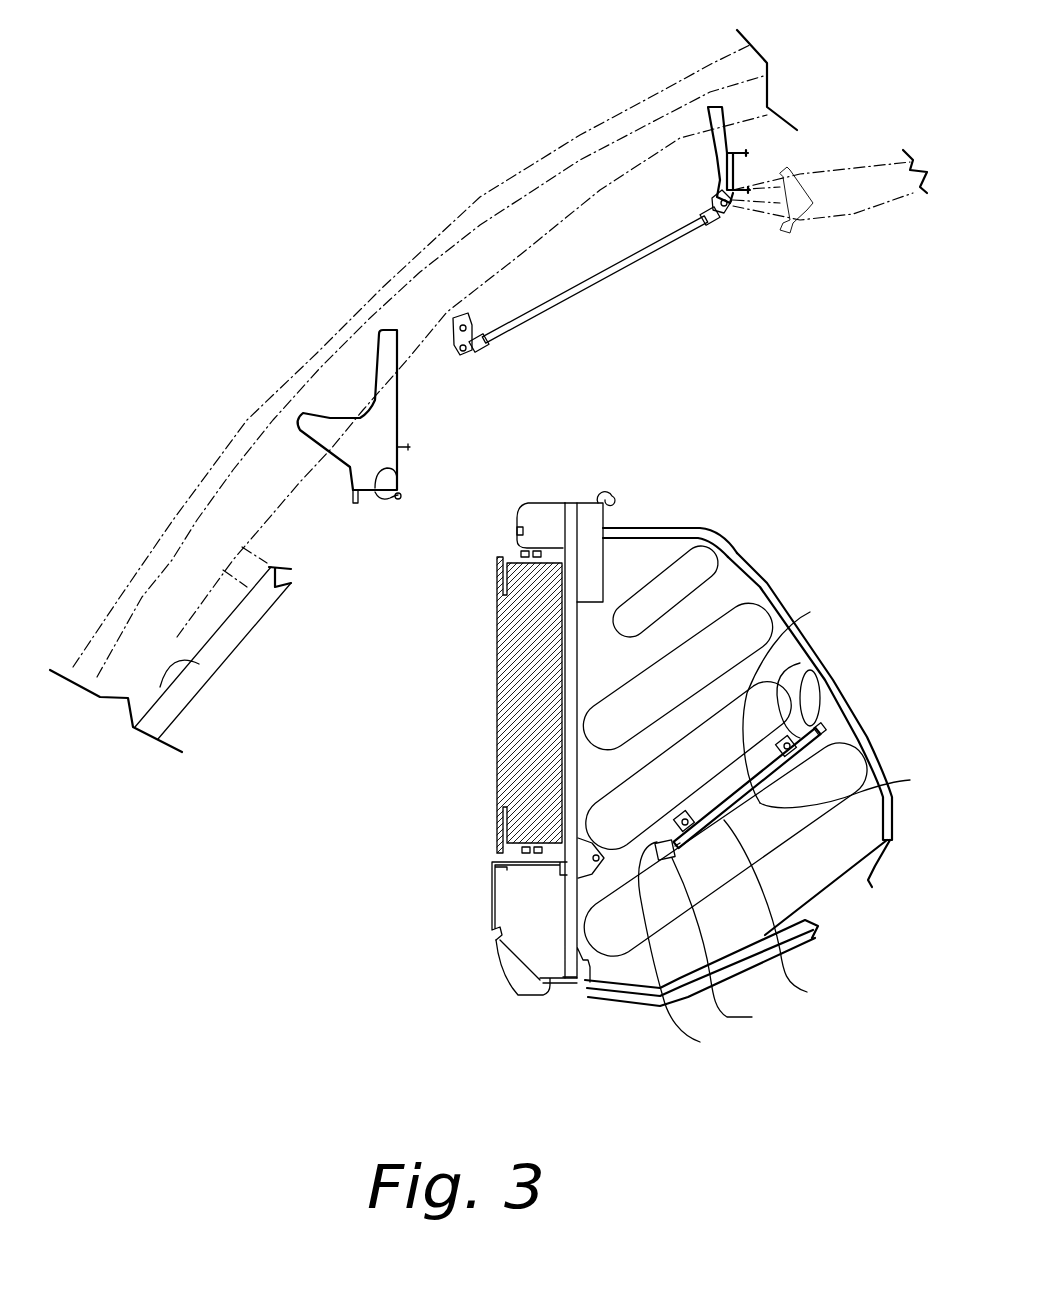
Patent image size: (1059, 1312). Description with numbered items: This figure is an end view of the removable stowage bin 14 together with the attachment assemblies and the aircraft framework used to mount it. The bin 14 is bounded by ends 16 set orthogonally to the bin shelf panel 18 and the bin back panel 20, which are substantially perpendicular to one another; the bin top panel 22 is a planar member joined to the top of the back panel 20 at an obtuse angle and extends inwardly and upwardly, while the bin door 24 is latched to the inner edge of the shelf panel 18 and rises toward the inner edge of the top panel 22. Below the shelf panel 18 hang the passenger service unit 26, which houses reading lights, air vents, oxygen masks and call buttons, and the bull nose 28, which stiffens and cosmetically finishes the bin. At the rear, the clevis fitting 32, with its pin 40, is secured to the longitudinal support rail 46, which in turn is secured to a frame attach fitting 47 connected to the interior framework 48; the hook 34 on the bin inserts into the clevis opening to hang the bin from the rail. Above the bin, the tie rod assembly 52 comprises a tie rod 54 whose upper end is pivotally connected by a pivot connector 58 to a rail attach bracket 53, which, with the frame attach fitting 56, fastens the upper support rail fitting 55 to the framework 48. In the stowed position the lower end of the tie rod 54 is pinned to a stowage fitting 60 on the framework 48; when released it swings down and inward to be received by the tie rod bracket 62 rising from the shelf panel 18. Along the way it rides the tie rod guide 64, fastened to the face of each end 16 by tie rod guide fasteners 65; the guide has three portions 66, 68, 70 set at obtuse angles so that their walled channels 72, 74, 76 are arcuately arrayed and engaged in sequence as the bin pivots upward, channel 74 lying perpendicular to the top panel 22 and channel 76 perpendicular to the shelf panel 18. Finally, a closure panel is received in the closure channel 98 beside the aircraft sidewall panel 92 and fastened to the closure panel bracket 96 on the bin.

The stowage bin 14 is at (813, 504).
The ends 16 is at (690, 575).
The bin shelf panel 18 is at (570, 977).
The bin back panel 20 is at (693, 530).
The bin top panel 22 is at (767, 583).
The bin door 24 is at (617, 1000).
The passenger service unit 26 is at (497, 712).
The bull nose 28 is at (520, 969).
The clevis fitting 32 is at (388, 501).
The hook 34 is at (610, 505).
The pin 40 is at (523, 497).
The longitudinal support rail 46 is at (356, 501).
The frame attach fitting 47 is at (305, 415).
The interior framework 48 is at (462, 283).
The tie rod assembly 52 is at (698, 237).
The rail attach bracket 53 is at (710, 177).
The tie rod 54 is at (578, 287).
The upper support rail fitting 55 is at (738, 154).
The frame attach fitting 56 is at (712, 122).
The pivot connector 58 is at (727, 210).
The stowage fitting 60 is at (472, 352).
The tie rod bracket 62 is at (580, 870).
The tie rod guide 64 is at (779, 913).
The tie rod guide fasteners 65 is at (800, 663).
The tie rod guide portion 66 is at (803, 690).
The tie rod guide portion 68 is at (810, 612).
The tie rod guide portion 70 is at (685, 948).
The tie rod guide channel 72 is at (823, 733).
The tie rod guide channel 74 is at (850, 827).
The tie rod guide channel 76 is at (727, 944).
The aircraft sidewall panel 92 is at (194, 684).
The closure panel bracket 96 is at (518, 522).
The closure channel 98 is at (285, 587).